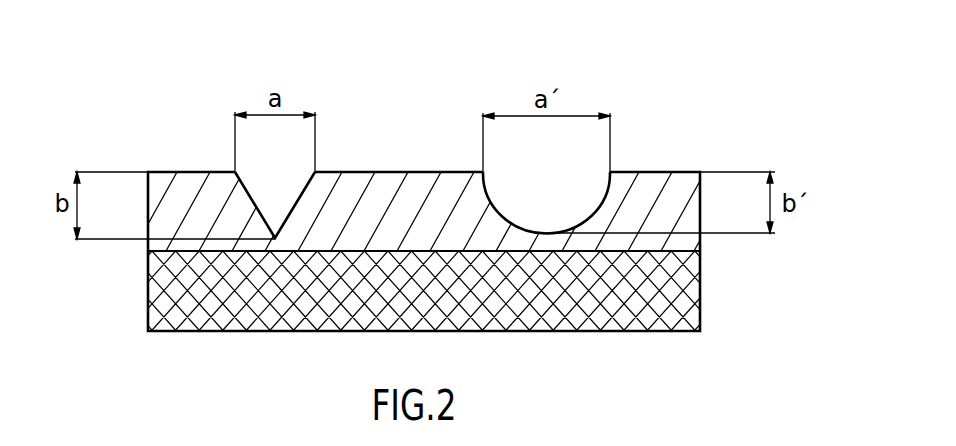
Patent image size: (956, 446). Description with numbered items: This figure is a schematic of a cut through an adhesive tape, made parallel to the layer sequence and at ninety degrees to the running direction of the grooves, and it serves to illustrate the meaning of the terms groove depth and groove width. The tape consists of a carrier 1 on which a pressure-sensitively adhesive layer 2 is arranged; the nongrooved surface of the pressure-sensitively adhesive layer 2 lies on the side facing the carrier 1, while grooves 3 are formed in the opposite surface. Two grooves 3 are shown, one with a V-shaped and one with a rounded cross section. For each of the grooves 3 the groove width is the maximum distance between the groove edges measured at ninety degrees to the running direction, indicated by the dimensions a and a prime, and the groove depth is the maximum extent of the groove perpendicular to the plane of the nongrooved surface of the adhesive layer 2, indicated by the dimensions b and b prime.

The carrier 1 is at (678, 302).
The pressure-sensitively adhesive layer 2 is at (657, 197).
The grooves 3 is at (280, 183).